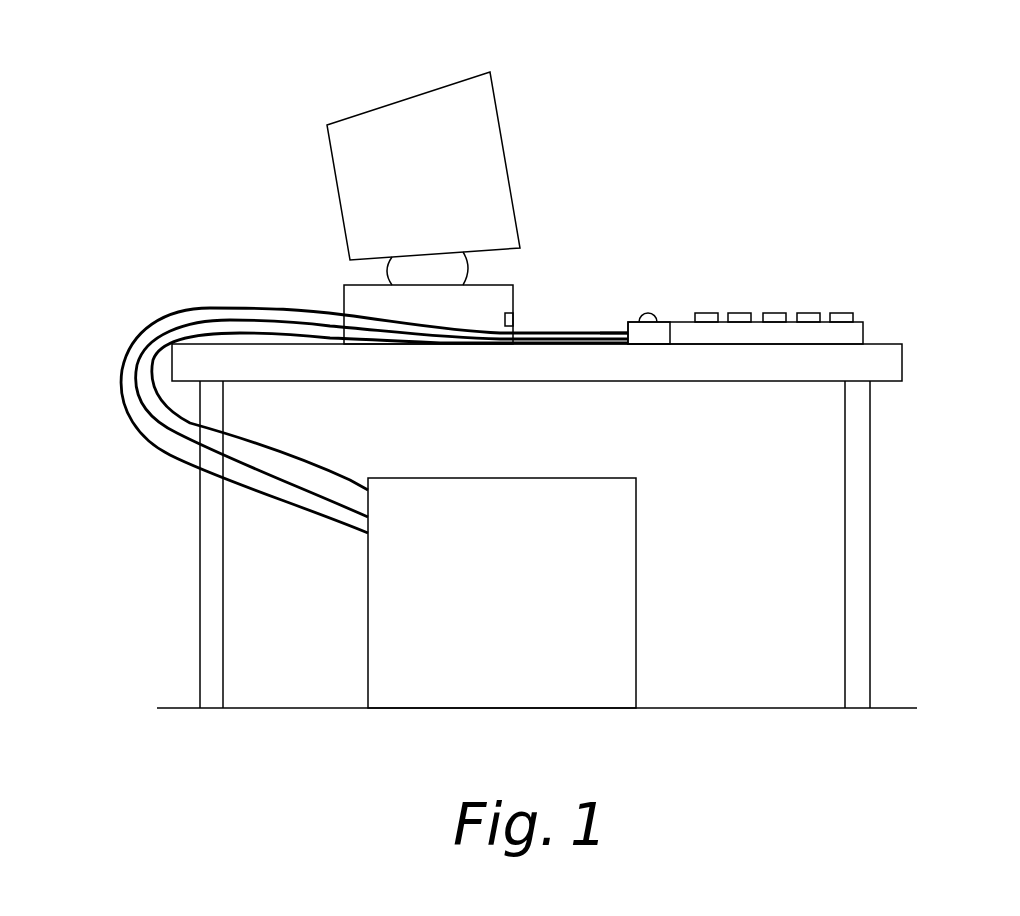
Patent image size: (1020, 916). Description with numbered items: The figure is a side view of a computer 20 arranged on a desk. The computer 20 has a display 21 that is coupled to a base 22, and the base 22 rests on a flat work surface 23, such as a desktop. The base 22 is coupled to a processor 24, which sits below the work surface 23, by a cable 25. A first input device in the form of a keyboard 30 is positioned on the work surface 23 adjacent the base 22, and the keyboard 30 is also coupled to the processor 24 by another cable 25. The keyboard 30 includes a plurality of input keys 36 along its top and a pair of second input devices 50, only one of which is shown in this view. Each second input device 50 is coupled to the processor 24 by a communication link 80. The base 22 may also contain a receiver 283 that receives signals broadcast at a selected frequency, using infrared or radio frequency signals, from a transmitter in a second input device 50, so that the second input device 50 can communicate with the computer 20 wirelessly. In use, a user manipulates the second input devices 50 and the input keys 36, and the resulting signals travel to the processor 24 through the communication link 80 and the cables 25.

The computer 20 is at (263, 78).
The display 21 is at (510, 170).
The base 22 is at (513, 293).
The receiver 283 is at (515, 313).
The work surface 23 is at (235, 342).
The processor 24 is at (368, 585).
The cable 25 is at (137, 388).
The communication link 80 is at (614, 304).
The keyboard 30 is at (863, 333).
The input keys 36 is at (773, 307).
The second input device 50 is at (652, 337).